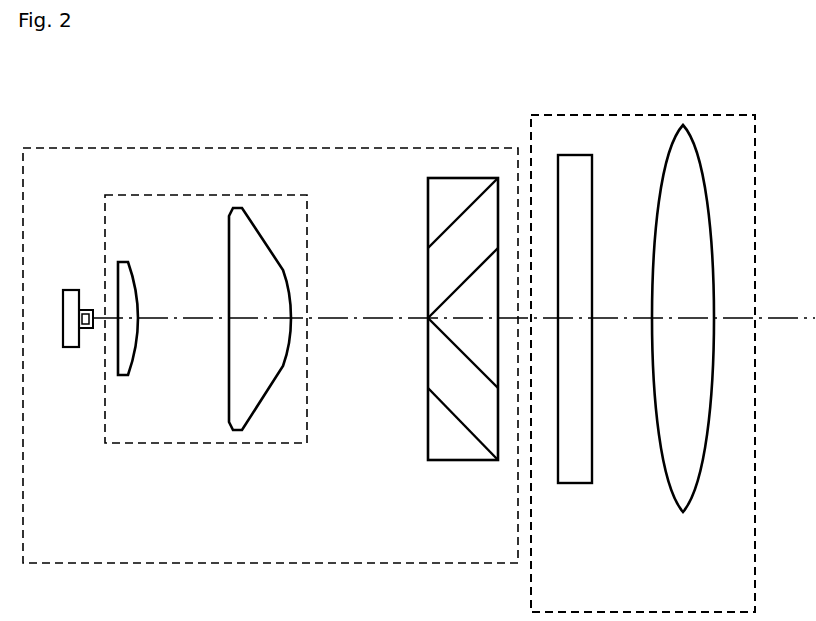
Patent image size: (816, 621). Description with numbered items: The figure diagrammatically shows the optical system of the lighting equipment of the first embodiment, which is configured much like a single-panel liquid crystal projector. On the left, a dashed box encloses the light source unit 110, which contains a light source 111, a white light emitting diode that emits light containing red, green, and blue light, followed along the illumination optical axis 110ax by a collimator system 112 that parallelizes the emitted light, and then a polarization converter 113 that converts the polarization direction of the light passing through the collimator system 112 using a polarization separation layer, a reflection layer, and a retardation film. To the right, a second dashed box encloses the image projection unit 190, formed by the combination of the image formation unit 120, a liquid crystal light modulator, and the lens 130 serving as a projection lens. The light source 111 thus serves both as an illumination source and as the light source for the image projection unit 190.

The light source unit 110 is at (152, 148).
The illumination optical axis 110ax is at (352, 318).
The light source 111 is at (83, 354).
The collimator system 112 is at (212, 443).
The polarization converter 113 is at (458, 462).
The image projection unit 190 is at (692, 115).
The image formation unit 120 is at (575, 487).
The lens 130 is at (683, 514).